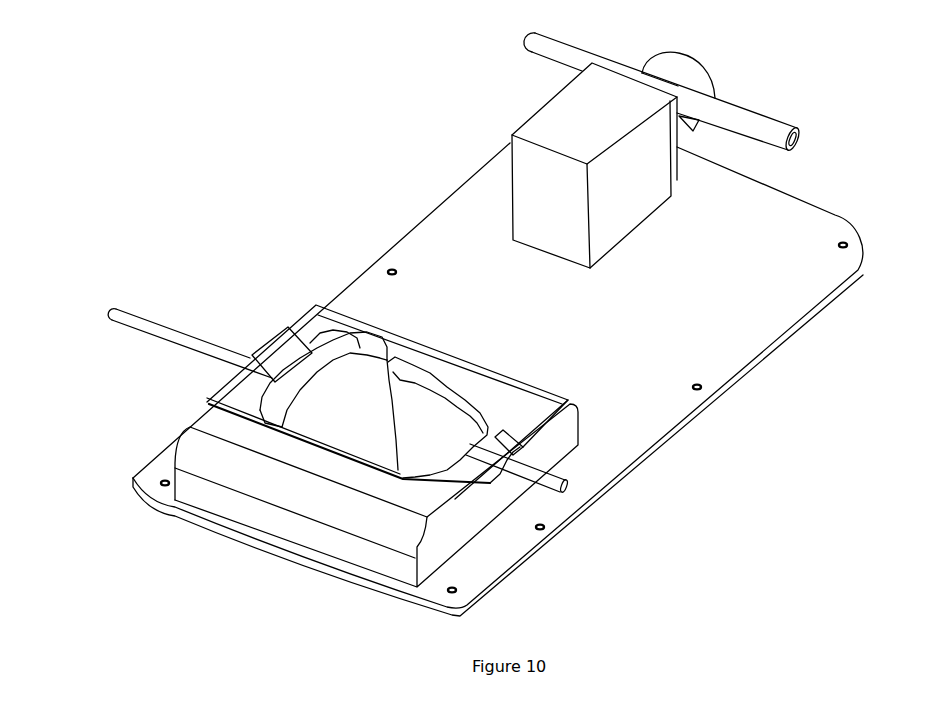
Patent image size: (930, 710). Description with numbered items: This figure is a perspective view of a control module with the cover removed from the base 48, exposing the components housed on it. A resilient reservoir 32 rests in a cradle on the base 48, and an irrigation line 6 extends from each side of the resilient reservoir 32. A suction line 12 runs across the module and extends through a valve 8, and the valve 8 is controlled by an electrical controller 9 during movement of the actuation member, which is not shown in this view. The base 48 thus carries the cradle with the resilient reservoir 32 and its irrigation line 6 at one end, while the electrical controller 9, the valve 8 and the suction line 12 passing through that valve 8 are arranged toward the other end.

The irrigation line 6 is at (165, 340).
The valve 8 is at (683, 62).
The electrical controller 9 is at (573, 111).
The suction line 12 is at (533, 36).
The resilient reservoir 32 is at (377, 343).
The base 48 is at (457, 218).